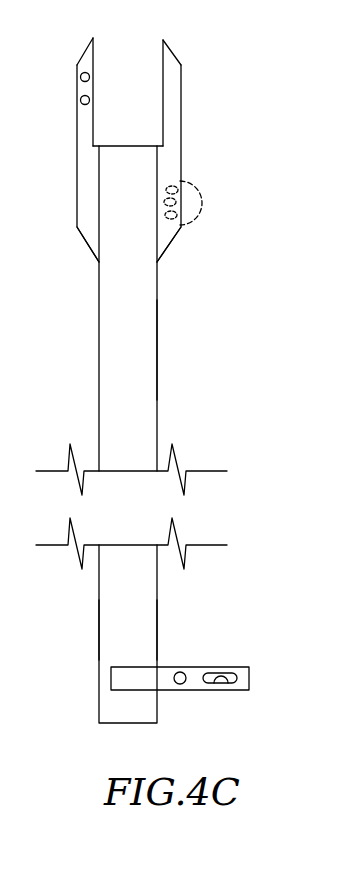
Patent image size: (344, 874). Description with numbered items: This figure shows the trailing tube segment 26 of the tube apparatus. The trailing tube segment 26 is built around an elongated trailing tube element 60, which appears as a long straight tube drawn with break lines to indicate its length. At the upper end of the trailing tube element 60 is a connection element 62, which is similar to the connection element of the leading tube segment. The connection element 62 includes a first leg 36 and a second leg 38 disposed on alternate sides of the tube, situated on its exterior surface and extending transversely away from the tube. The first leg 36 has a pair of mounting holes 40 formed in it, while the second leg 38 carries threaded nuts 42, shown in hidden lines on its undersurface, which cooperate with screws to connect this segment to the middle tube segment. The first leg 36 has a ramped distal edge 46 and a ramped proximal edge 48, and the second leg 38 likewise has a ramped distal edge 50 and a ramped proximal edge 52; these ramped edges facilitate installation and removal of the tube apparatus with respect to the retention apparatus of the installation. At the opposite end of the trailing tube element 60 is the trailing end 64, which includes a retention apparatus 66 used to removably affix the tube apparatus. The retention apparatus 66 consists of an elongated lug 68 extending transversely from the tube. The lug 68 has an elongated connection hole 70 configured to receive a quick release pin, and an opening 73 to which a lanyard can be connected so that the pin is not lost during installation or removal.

The trailing tube segment 26 is at (158, 325).
The first leg 36 is at (77, 121).
The second leg 38 is at (181, 97).
The mounting holes 40 is at (80, 99).
The threaded nuts 42 is at (191, 203).
The distal edge 46 is at (85, 51).
The proximal edge 48 is at (84, 237).
The distal edge 50 is at (171, 52).
The proximal edge 52 is at (170, 244).
The trailing tube element 60 is at (158, 387).
The connection element 62 is at (197, 133).
The trailing end 64 is at (158, 632).
The retention apparatus 66 is at (168, 693).
The elongated lug 68 is at (225, 666).
The elongated connection hole 70 is at (221, 684).
The opening 73 is at (180, 671).